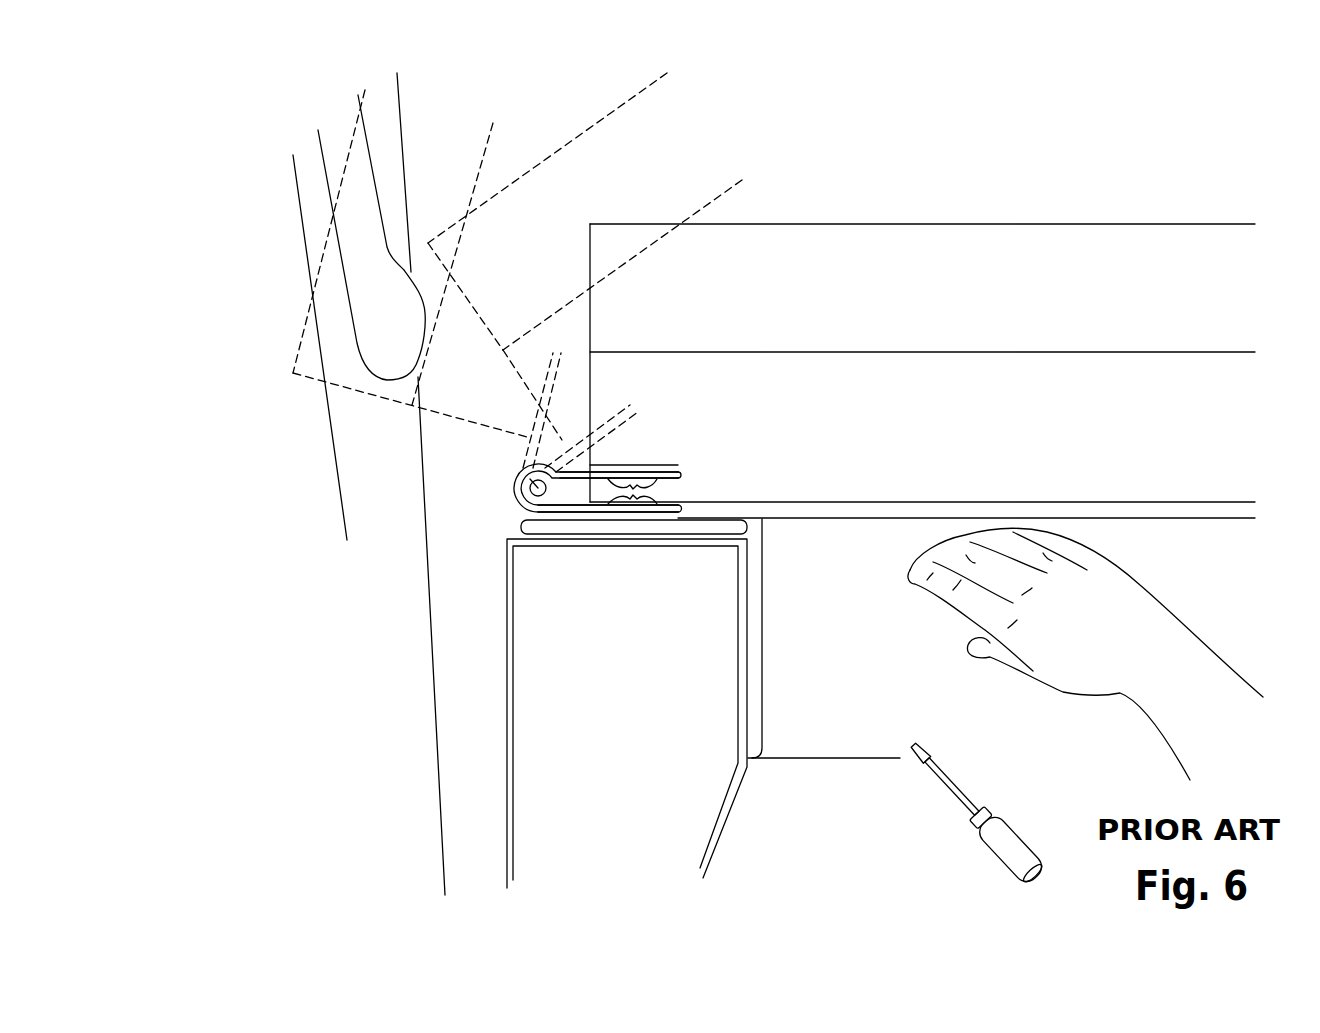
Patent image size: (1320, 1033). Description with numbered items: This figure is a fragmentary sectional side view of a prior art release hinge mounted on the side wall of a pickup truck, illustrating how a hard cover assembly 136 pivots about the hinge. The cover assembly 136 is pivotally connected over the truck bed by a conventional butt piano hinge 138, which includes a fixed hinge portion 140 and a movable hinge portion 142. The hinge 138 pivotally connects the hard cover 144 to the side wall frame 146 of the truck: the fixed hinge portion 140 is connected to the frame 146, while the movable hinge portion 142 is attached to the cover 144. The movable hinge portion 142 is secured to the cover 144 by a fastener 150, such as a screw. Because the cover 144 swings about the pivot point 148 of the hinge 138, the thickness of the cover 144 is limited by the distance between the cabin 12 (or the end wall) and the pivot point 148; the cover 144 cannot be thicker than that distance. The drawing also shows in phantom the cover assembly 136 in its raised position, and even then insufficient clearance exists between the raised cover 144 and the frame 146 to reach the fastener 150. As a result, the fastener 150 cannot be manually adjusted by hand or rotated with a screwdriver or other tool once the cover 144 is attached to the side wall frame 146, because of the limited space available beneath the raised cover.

The cabin 12 is at (313, 202).
The hard cover assembly 136 is at (594, 99).
The butt piano hinge 138 is at (516, 503).
The fixed hinge portion 140 is at (647, 503).
The movable hinge portion 142 is at (678, 478).
The hard cover 144 is at (913, 223).
The side wall frame 146 is at (722, 822).
The pivot point 148 is at (537, 490).
The fastener 150 is at (653, 482).